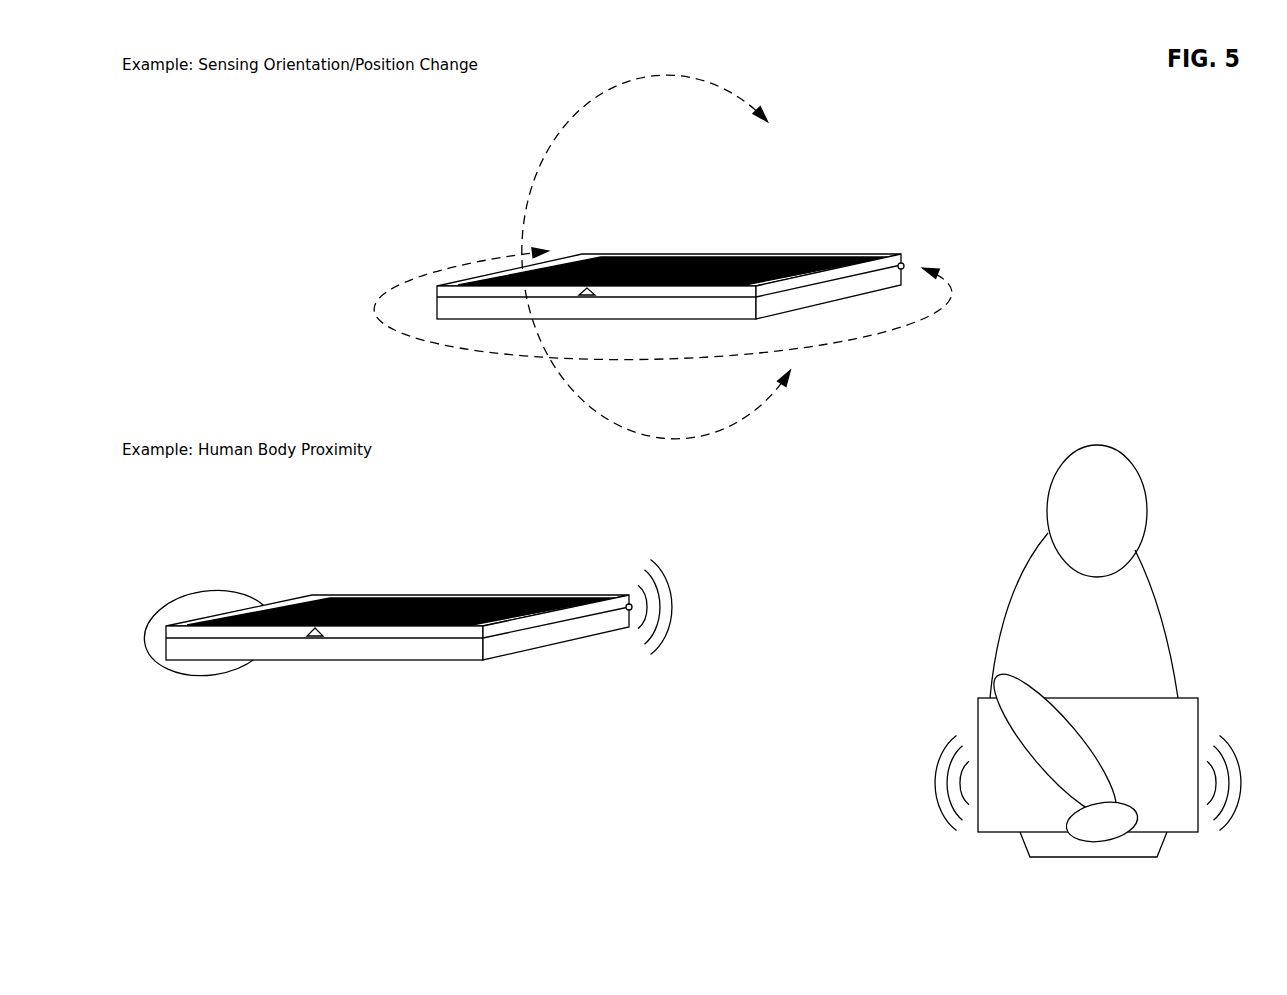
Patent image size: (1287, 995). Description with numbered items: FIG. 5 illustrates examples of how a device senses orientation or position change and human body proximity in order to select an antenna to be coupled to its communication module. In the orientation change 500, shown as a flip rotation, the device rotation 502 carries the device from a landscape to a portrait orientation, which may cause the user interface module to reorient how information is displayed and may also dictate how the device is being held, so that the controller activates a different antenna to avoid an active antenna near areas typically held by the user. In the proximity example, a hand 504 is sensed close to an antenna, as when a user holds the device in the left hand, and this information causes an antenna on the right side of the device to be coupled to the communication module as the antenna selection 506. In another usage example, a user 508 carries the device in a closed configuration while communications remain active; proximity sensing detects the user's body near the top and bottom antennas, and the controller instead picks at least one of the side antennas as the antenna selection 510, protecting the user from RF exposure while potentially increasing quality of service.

The orientation change (flip rotation) 500 is at (535, 152).
The device rotation 502 is at (358, 283).
The hand 504 is at (230, 586).
The antenna selection 506 is at (672, 582).
The user 508 is at (1012, 586).
The antenna selection 510 is at (935, 793).